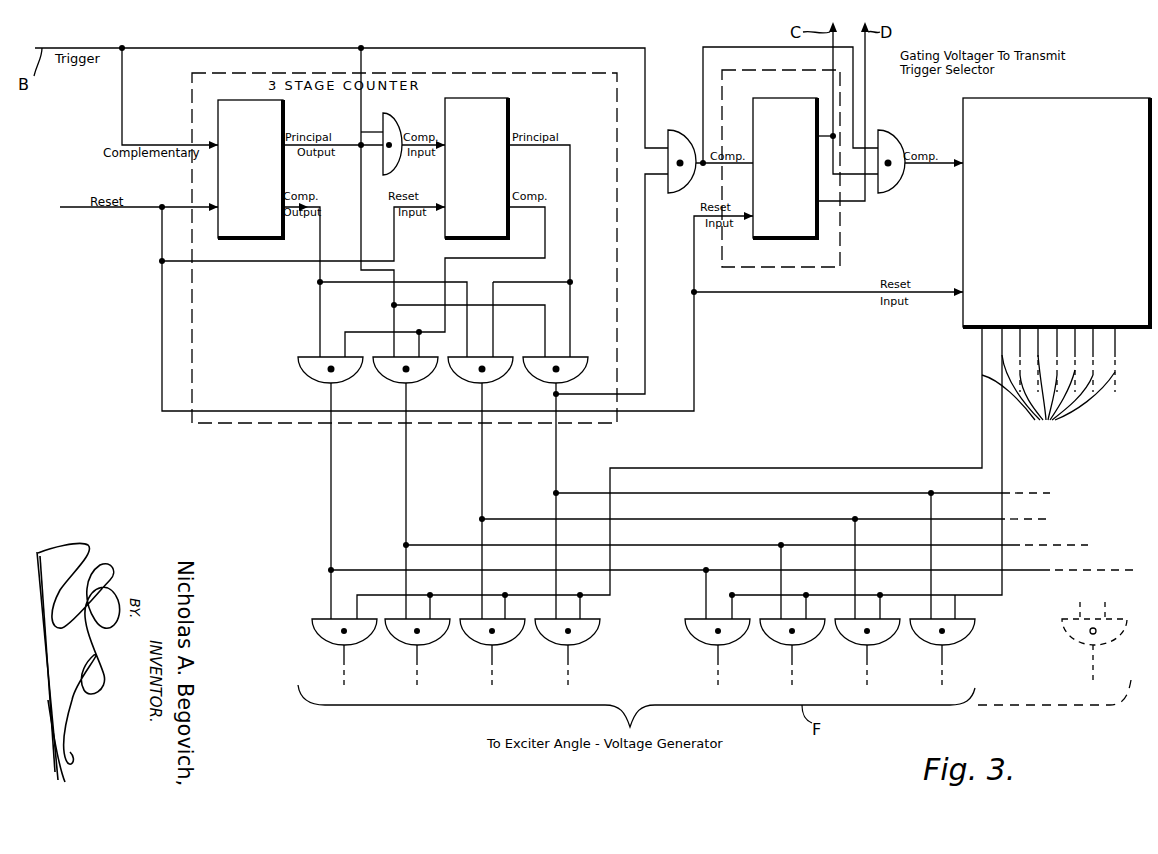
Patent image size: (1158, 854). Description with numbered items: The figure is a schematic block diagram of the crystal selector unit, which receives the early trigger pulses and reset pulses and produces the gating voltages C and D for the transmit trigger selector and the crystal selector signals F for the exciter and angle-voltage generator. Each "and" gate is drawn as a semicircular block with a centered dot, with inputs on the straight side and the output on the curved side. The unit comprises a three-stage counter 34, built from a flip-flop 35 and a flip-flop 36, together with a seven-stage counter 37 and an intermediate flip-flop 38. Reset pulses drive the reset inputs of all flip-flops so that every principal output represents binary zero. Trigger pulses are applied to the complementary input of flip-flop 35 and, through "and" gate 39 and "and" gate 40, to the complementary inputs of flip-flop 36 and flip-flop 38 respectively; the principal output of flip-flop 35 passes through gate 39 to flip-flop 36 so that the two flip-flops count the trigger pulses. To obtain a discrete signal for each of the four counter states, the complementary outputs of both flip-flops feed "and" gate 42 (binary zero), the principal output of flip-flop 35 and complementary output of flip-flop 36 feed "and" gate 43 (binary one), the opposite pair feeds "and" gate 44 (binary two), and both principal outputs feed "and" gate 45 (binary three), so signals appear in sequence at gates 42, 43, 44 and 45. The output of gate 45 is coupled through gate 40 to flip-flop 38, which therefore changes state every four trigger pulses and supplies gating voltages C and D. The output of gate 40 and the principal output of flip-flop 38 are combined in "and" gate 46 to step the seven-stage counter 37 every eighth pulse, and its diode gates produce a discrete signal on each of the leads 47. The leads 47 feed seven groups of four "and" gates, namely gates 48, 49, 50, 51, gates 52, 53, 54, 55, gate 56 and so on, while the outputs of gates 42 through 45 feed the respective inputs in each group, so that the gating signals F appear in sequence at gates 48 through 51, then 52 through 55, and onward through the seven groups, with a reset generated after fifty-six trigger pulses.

The 3-stage counter 34 is at (258, 427).
The flip-flop 35 is at (257, 231).
The flip-flop 36 is at (500, 187).
The 7-stage counter 37 is at (1056, 212).
The intermediate flip-flop 38 is at (775, 271).
The "and" gate 39 is at (393, 128).
The "and" gate 40 is at (687, 143).
The "and" gate 42 is at (342, 377).
The "and" gate 43 is at (417, 377).
The "and" gate 44 is at (492, 377).
The "and" gate 45 is at (567, 373).
The "and" gate 46 is at (893, 143).
The leads 47 is at (1048, 383).
The "and" gate 48 is at (352, 637).
The "and" gate 49 is at (425, 637).
The "and" gate 50 is at (500, 637).
The "and" gate 51 is at (576, 637).
The "and" gate 52 is at (722, 637).
The "and" gate 53 is at (806, 637).
The "and" gate 54 is at (878, 637).
The "and" gate 55 is at (952, 637).
The "and" gate 56 is at (1100, 637).